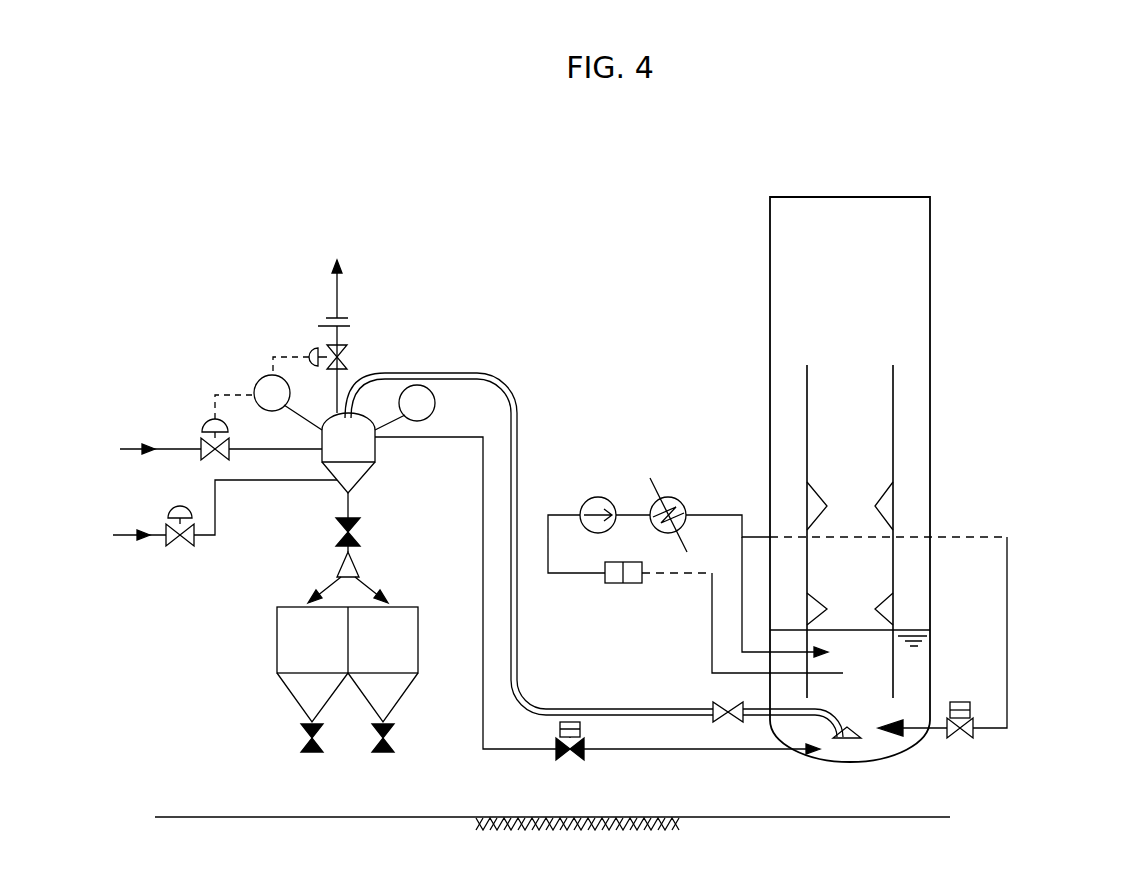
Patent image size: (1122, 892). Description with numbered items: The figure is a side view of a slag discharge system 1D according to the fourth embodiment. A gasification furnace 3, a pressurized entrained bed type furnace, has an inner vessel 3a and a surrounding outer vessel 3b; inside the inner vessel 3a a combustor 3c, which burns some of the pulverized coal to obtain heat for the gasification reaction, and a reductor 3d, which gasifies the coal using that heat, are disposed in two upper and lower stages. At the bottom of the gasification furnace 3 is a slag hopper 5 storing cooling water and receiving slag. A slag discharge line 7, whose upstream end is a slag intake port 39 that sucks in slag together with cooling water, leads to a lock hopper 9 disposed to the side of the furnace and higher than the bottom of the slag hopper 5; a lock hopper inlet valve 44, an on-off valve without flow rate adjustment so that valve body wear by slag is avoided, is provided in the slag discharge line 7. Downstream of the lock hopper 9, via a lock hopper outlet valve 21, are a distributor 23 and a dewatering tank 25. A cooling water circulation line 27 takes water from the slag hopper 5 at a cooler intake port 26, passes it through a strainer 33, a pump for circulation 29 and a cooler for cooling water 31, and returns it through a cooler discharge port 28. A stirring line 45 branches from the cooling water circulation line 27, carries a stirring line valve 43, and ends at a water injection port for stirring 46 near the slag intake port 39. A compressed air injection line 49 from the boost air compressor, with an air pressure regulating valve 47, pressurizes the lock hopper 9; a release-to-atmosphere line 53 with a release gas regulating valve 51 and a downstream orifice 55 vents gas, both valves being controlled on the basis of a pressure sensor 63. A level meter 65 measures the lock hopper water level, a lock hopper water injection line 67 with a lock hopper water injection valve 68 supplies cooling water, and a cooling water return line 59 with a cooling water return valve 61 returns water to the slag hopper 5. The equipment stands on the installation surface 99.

The slag discharge system 1D is at (447, 252).
The gasification furnace 3 is at (1000, 303).
The inner vessel 3a is at (893, 421).
The outer vessel 3b is at (930, 452).
The combustor 3c is at (836, 579).
The reductor 3d is at (836, 449).
The slag hopper 5 is at (930, 638).
The slag discharge line 7 is at (596, 709).
The lock hopper 9 is at (375, 449).
The lock hopper outlet valve 21 is at (337, 532).
The distributor 23 is at (360, 565).
The dewatering tank 25 is at (277, 640).
The cooler intake port 26 is at (843, 673).
The cooling water circulation line 27 is at (742, 515).
The cooler discharge port 28 is at (828, 652).
The pump for circulation 29 is at (598, 497).
The cooler for cooling water 31 is at (668, 497).
The strainer 33 is at (630, 583).
The slag intake port 39 is at (845, 738).
The stirring line valve 43 is at (960, 738).
The lock hopper inlet valve 44 is at (716, 703).
The stirring line 45 is at (985, 537).
The water injection port for stirring 46 is at (890, 738).
The air pressure regulating valve 47 is at (205, 428).
The compressed air injection line 49 is at (180, 456).
The release gas regulating valve 51 is at (306, 352).
The release-to-atmosphere line 53 is at (335, 291).
The orifice 55 is at (352, 320).
The cooling water return line 59 is at (688, 749).
The cooling water return valve 61 is at (570, 760).
The pressure sensor 63 is at (259, 380).
The level meter 65 is at (435, 403).
The lock hopper water injection line 67 is at (208, 546).
The lock hopper water injection valve 68 is at (180, 546).
The installation surface 99 is at (445, 817).